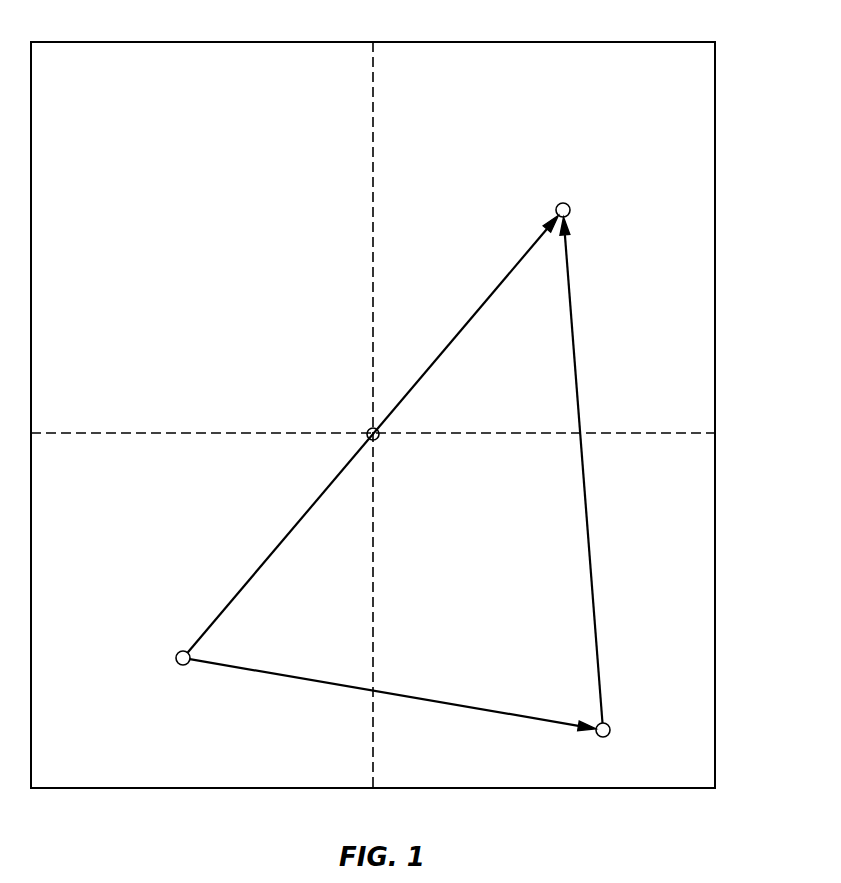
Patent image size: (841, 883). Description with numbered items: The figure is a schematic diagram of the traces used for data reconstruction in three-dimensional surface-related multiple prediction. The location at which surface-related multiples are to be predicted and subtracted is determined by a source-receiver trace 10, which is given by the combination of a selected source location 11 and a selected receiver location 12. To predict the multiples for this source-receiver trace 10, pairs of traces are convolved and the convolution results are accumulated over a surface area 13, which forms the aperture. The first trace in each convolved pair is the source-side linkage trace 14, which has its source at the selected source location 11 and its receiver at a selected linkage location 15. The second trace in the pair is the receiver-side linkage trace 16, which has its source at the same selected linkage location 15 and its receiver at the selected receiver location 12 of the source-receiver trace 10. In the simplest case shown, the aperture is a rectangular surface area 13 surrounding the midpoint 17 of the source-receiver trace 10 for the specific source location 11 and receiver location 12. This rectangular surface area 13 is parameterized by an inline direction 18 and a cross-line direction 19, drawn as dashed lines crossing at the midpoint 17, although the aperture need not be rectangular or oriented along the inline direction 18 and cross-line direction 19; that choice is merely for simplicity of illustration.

The source-receiver trace 10 is at (278, 544).
The selected source location 11 is at (176, 657).
The selected receiver location 12 is at (571, 212).
The surface area 13 is at (563, 42).
The source-side linkage trace 14 is at (450, 702).
The selected linkage location 15 is at (611, 731).
The receiver-side linkage trace 16 is at (575, 336).
The midpoint 17 is at (366, 429).
The inline direction 18 is at (178, 433).
The cross-line direction 19 is at (375, 116).